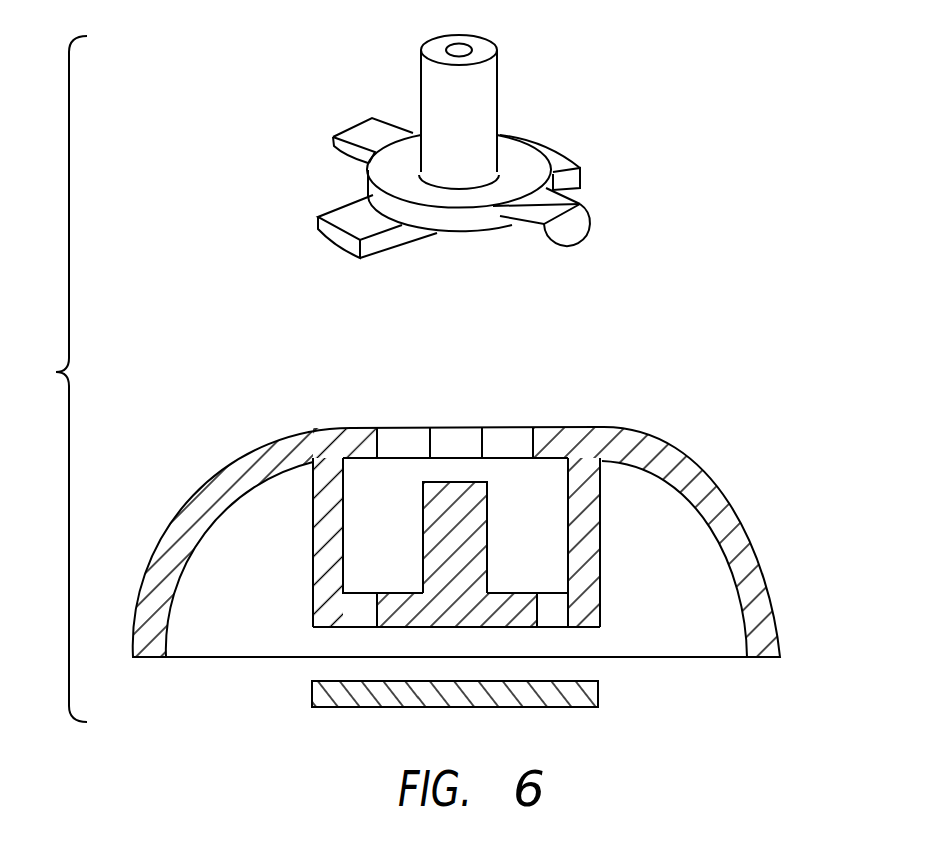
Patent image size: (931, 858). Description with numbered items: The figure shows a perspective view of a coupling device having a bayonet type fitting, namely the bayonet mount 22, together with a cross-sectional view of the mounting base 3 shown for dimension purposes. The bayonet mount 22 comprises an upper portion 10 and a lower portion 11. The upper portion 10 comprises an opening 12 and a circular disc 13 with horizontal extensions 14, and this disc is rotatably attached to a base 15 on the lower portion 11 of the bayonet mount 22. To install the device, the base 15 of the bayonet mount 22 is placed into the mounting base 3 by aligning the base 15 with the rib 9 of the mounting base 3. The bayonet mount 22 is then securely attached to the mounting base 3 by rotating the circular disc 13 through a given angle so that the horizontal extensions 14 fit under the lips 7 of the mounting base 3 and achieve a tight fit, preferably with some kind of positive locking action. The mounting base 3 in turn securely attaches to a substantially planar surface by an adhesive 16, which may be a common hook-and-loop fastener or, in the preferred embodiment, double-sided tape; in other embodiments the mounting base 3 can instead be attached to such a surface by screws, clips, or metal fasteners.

The mounting base 3 is at (718, 503).
The lips 7 is at (355, 432).
The rib 9 is at (483, 540).
The upper portion 10 is at (490, 103).
The lower portion 11 is at (491, 222).
The opening 12 is at (463, 46).
The circular disc 13 is at (377, 200).
The horizontal extensions 14 is at (570, 226).
The base 15 is at (333, 231).
The adhesive 16 is at (593, 690).
The bayonet mount 22 is at (568, 141).